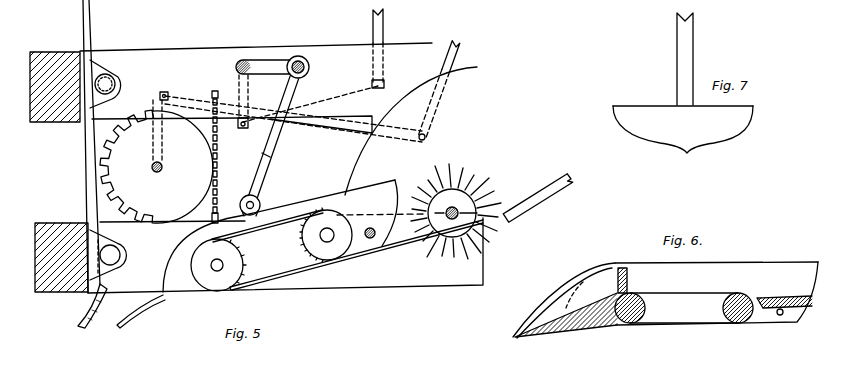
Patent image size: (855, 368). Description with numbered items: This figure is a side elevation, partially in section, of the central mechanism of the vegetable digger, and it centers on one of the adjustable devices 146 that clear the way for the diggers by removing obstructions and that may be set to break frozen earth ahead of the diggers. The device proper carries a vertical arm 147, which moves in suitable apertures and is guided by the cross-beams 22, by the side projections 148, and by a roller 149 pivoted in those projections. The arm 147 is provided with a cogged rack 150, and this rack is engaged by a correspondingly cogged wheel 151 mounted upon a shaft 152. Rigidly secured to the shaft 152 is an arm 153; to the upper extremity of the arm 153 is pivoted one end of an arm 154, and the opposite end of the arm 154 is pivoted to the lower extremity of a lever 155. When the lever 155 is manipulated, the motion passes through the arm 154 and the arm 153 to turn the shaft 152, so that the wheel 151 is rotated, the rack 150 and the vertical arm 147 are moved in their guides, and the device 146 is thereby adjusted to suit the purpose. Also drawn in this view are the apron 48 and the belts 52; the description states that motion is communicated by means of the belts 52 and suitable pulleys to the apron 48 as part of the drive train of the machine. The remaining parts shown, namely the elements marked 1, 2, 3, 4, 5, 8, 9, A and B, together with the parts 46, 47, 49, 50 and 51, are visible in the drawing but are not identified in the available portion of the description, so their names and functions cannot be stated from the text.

In FIG. 5, the vertical arm 147 is at (92, 24).
In FIG. 5, the side projections 148 is at (97, 60).
In FIG. 5, the roller 149 is at (121, 253).
In FIG. 5, the adjustable device 146 is at (117, 289).
In FIG. 5, the cogged rack 150 is at (143, 80).
In FIG. 5, the cogged wheel 151 is at (156, 166).
In FIG. 5, the shaft 152 is at (103, 117).
In FIG. 5, the arm 153 is at (166, 92).
In FIG. 5, the arm 154 is at (305, 128).
In FIG. 5, the lever 155 is at (459, 49).
In FIG. 5, the cross-beams 22 is at (72, 122).
In FIG. 5, the rod 1 is at (372, 40).
In FIG. 5, the bar 2 is at (246, 59).
In FIG. 5, the link 3 is at (314, 99).
In FIG. 5, the pin 4 is at (250, 102).
In FIG. 5, the lever 5 is at (270, 153).
In FIG. 5, the arm 8 is at (264, 176).
In FIG. 5, the pivot 9 is at (261, 204).
In FIG. 5, the chain A is at (219, 166).
In FIG. 5, the chain end B is at (217, 88).
In FIG. 5, the curved tip 46 is at (124, 317).
In FIG. 6, the curved tip 46 is at (543, 331).
In FIG. 5, the carrier plate 47 is at (323, 236).
In FIG. 6, the apron 48 is at (684, 299).
In FIG. 5, the roller 49 is at (456, 211).
In FIG. 6, the roller 49 is at (630, 324).
In FIG. 5, the pulley 50 is at (333, 247).
In FIG. 5, the belt 51 is at (307, 277).
In FIG. 5, the belts 52 is at (213, 275).